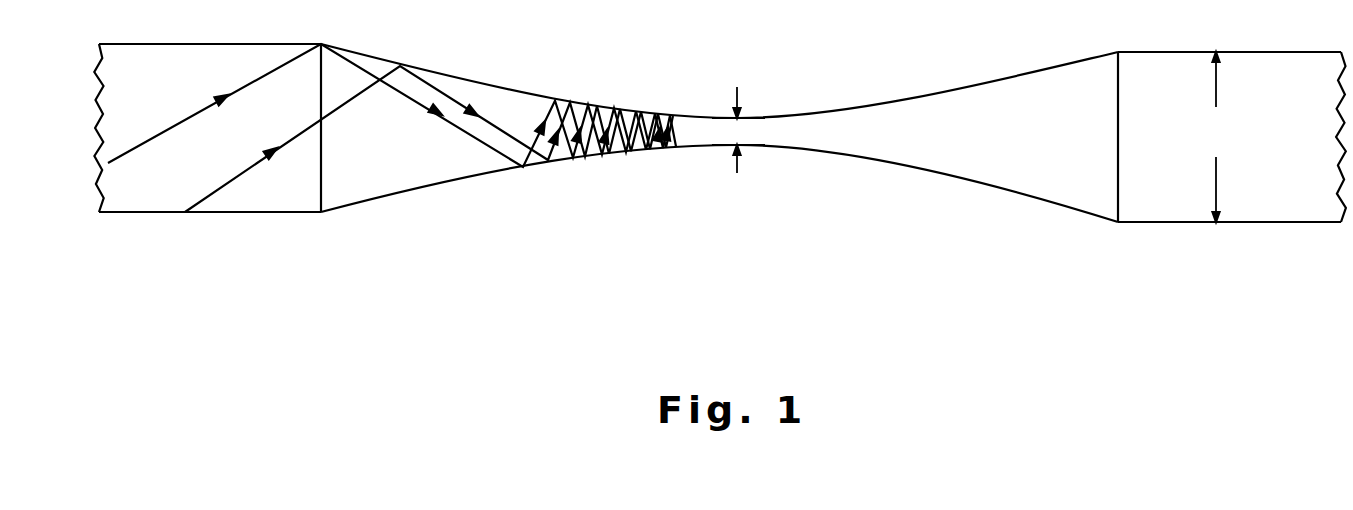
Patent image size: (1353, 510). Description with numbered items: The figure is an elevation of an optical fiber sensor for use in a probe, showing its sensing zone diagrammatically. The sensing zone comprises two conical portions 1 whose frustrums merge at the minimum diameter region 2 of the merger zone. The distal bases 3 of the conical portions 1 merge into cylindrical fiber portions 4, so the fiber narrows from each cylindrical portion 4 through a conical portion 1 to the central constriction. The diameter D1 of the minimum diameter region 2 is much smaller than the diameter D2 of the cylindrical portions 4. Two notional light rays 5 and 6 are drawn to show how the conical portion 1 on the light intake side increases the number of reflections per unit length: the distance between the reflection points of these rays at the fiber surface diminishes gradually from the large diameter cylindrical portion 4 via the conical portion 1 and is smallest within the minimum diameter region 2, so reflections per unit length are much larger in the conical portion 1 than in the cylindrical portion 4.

The conical portion 1 is at (498, 100).
The minimum diameter region 2 is at (697, 135).
The distal base 3 is at (321, 167).
The cylindrical fiber portion 4 is at (292, 185).
The notional light ray 5 is at (123, 155).
The notional light ray 6 is at (233, 182).
The diameter of the minimum diameter region D1 is at (737, 173).
The diameter of the cylindrical portions D2 is at (1220, 137).